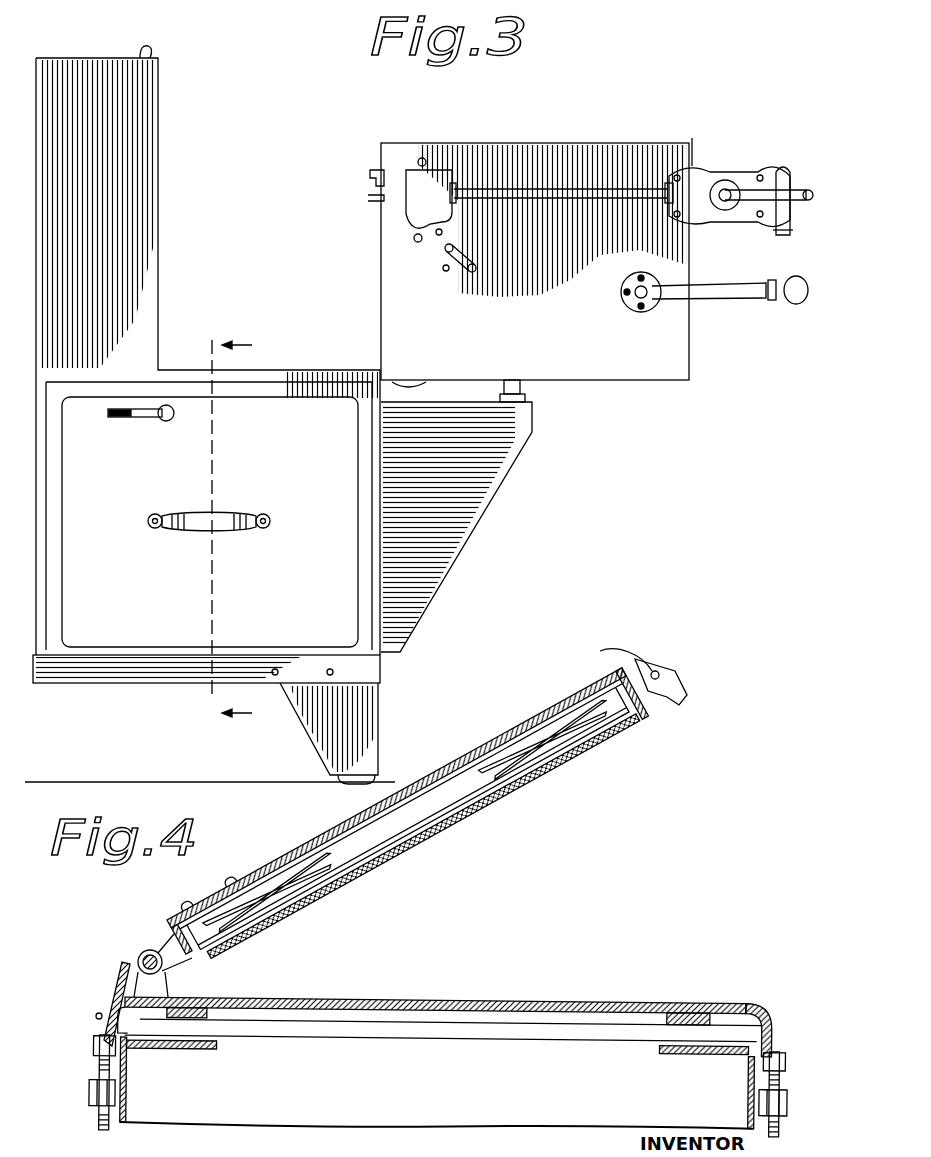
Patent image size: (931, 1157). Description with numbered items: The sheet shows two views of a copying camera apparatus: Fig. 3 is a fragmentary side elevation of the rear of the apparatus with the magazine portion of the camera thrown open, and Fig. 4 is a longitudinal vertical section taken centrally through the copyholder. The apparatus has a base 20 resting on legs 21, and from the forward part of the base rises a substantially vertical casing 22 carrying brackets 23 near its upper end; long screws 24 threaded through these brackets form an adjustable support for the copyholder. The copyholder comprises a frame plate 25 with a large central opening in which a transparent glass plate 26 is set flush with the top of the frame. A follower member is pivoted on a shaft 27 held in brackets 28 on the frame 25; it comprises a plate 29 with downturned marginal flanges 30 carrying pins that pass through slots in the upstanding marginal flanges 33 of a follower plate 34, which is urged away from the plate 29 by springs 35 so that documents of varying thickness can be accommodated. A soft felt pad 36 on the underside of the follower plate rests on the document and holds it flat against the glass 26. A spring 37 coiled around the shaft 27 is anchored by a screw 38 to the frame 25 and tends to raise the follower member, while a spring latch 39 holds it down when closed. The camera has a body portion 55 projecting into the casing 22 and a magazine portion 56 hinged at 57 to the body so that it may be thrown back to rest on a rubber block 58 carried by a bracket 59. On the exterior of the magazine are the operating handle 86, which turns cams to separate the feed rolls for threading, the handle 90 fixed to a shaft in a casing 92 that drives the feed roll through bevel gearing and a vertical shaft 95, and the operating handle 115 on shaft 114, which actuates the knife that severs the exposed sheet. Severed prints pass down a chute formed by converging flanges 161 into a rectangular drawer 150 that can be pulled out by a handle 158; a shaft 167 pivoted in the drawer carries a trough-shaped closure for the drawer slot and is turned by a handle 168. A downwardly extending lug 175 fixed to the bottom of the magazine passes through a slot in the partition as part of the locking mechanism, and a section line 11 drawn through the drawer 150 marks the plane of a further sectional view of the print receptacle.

In FIG. 3, the section line 11 is at (226, 336).
In FIG. 3, the base 20 is at (125, 682).
In FIG. 3, the legs 21 is at (302, 734).
In FIG. 4, the casing 22 is at (126, 1112).
In FIG. 4, the brackets 23 is at (88, 1095).
In FIG. 4, the long screws 24 is at (96, 1060).
In FIG. 4, the frame plate 25 is at (742, 1002).
In FIG. 4, the plate of transparent material 26 is at (476, 997).
In FIG. 4, the shaft 27 is at (148, 950).
In FIG. 4, the brackets 28 is at (140, 987).
In FIG. 4, the plate 29 is at (480, 752).
In FIG. 4, the downturned marginal flanges 30 is at (632, 702).
In FIG. 4, the upstanding marginal flanges 33 is at (629, 726).
In FIG. 4, the follower plate 34 is at (426, 836).
In FIG. 4, the springs 35 is at (566, 712).
In FIG. 4, the soft pad 36 is at (500, 812).
In FIG. 4, the spring 37 is at (136, 962).
In FIG. 4, the screw 38 is at (96, 1017).
In FIG. 4, the spring latch 39 is at (676, 699).
In FIG. 3, the body portion 55 is at (98, 68).
In FIG. 3, the magazine portion 56 is at (660, 379).
In FIG. 3, the hinge 57 is at (392, 386).
In FIG. 3, the rubber block 58 is at (524, 392).
In FIG. 3, the bracket 59 is at (485, 476).
In FIG. 3, the operating handle 86 is at (480, 270).
In FIG. 3, the handle 90 is at (806, 200).
In FIG. 3, the casing 92 is at (742, 172).
In FIG. 3, the vertical shaft 95 is at (556, 188).
In FIG. 3, the shaft 114 is at (630, 302).
In FIG. 3, the operating handle 115 is at (752, 300).
In FIG. 3, the drawer 150 is at (270, 616).
In FIG. 3, the handle 158 is at (236, 515).
In FIG. 3, the flanges 161 is at (384, 204).
In FIG. 3, the shaft 167 is at (167, 421).
In FIG. 3, the handle 168 is at (118, 420).
In FIG. 3, the lug 175 is at (372, 170).